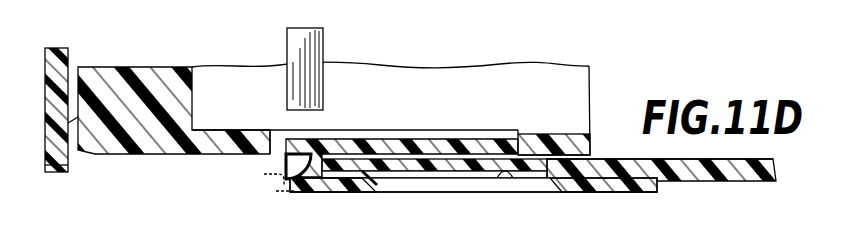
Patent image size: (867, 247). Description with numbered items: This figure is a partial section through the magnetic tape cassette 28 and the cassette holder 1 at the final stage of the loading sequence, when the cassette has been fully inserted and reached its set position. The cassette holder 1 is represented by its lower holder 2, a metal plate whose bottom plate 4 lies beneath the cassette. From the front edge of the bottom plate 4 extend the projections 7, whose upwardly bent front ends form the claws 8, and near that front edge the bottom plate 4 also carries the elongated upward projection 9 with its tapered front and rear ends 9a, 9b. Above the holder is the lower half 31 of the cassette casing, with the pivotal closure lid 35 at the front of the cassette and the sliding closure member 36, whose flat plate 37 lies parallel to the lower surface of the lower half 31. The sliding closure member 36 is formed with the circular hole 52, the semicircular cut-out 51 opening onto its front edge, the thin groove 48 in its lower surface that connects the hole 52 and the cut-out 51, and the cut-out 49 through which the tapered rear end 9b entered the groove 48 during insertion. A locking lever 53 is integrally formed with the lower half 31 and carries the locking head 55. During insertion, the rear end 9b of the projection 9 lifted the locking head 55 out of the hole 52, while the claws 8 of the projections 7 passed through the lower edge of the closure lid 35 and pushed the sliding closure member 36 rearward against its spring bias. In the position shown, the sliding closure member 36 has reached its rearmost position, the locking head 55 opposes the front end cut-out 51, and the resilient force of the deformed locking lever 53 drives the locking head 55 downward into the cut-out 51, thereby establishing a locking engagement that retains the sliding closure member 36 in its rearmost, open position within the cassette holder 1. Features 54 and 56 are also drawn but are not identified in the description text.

The cassette holder 1 is at (647, 193).
The lower holder 2 is at (293, 188).
The bottom plate 4 is at (607, 188).
The projections 7 is at (274, 191).
The claws 8 is at (264, 177).
The projection 9 is at (444, 168).
The tapered front end 9a is at (362, 166).
The tapered rear end 9b is at (546, 178).
The magnetic tape cassette 28 is at (548, 48).
The lower half 31 is at (563, 137).
The pivotal closure lid 35 is at (67, 152).
The sliding closure member 36 is at (692, 176).
The flat plate 37 is at (740, 176).
The thin groove 48 is at (356, 176).
The cut-out 49 is at (55, 174).
The semicircular cut-out 51 is at (304, 179).
The circular hole 52 is at (507, 169).
The locking lever 53 is at (328, 146).
The slot 54 is at (278, 138).
The locking head 55 is at (298, 184).
The post 56 is at (324, 52).